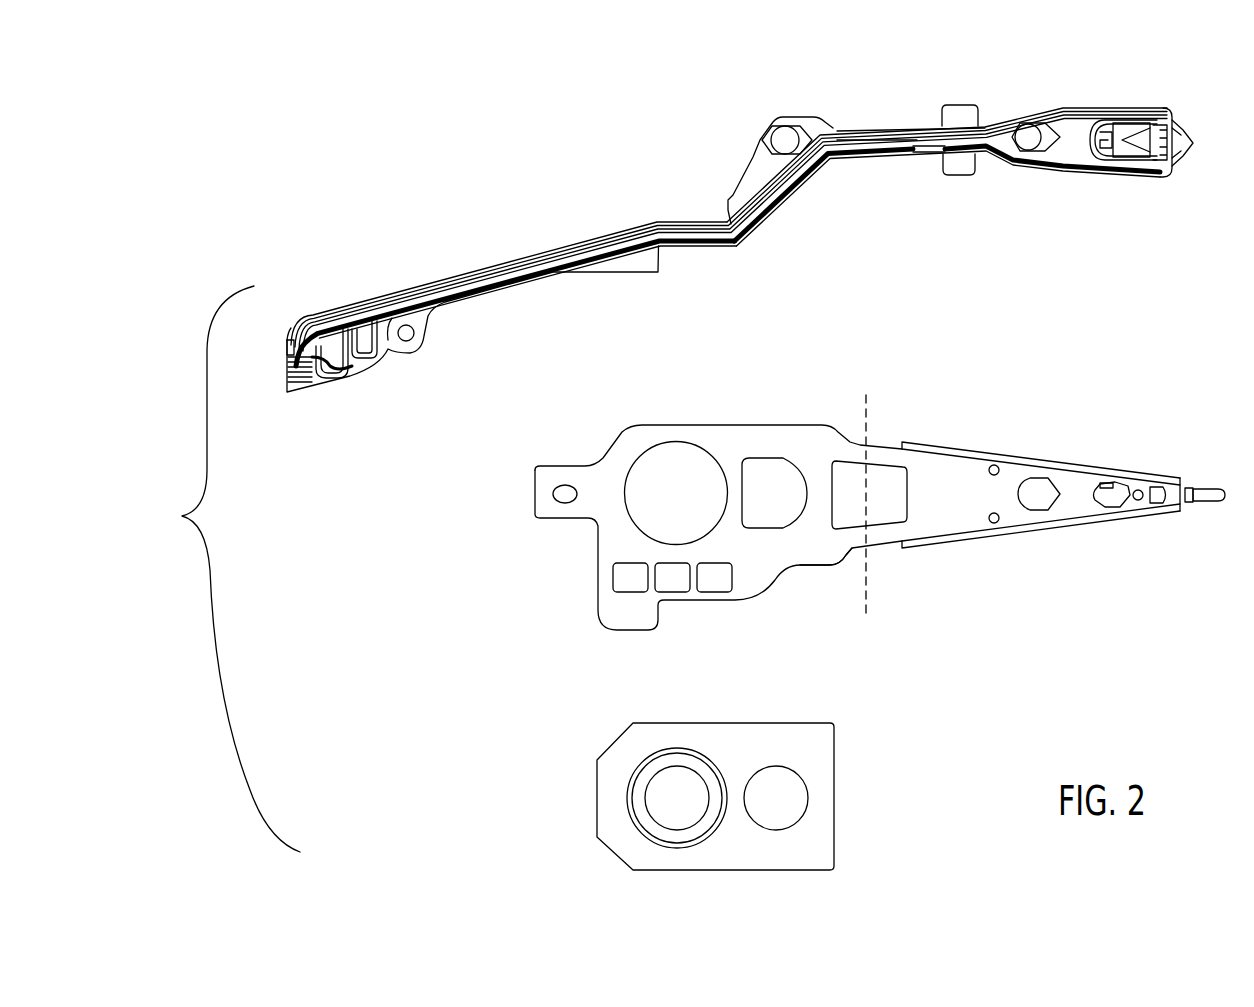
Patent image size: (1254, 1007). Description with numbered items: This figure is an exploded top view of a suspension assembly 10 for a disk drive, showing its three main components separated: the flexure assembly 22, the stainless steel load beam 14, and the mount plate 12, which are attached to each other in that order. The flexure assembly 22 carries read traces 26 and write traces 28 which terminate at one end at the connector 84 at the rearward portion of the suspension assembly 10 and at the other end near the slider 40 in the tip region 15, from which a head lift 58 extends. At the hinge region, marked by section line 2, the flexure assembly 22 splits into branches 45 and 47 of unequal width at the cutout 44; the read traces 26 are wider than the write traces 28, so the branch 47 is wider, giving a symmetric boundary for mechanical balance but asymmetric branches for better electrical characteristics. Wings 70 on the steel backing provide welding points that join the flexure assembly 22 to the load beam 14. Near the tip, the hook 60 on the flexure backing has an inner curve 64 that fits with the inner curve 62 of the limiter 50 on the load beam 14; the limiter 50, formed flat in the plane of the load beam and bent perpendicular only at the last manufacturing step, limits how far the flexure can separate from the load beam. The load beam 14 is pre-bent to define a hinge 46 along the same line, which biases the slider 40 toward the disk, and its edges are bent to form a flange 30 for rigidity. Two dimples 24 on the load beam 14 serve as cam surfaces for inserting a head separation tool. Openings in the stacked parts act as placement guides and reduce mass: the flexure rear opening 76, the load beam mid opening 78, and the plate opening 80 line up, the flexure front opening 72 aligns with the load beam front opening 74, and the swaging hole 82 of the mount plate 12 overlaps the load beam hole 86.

The suspension assembly 10 is at (223, 569).
The mount plate 12 is at (660, 769).
The stainless steel load beam 14 is at (827, 499).
The tip region 15 is at (1193, 122).
The flexure assembly 22 is at (764, 228).
The dimples 24 is at (993, 464).
The read traces 26 is at (840, 124).
The write traces 28 is at (834, 164).
The flange 30 is at (914, 441).
The slider 40 is at (1110, 165).
The cutout 44 is at (893, 142).
The branch 45 is at (858, 163).
The hinge 46 is at (852, 567).
The branch 47 is at (865, 116).
The limiter 50 is at (1110, 484).
The head lift 58 is at (1213, 492).
The hook 60 is at (1090, 159).
The inner curve 62 is at (1105, 503).
The inner curve 64 is at (1114, 136).
The wings 70 is at (955, 116).
The flexure front opening 72 is at (1027, 129).
The load beam front opening 74 is at (1038, 490).
The flexure rear opening 76 is at (789, 128).
The load beam mid opening 78 is at (760, 478).
The plate opening 80 is at (778, 795).
The swaging hole 82 is at (680, 788).
The connector 84 is at (353, 347).
The load beam hole 86 is at (670, 475).
The line 2- 2 is at (866, 506).